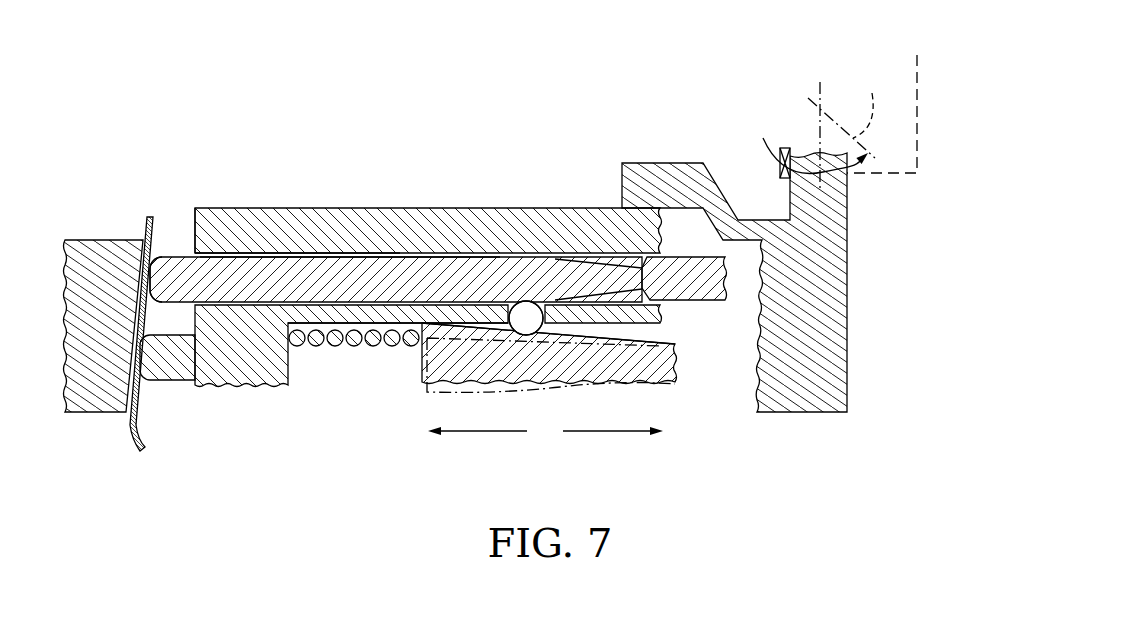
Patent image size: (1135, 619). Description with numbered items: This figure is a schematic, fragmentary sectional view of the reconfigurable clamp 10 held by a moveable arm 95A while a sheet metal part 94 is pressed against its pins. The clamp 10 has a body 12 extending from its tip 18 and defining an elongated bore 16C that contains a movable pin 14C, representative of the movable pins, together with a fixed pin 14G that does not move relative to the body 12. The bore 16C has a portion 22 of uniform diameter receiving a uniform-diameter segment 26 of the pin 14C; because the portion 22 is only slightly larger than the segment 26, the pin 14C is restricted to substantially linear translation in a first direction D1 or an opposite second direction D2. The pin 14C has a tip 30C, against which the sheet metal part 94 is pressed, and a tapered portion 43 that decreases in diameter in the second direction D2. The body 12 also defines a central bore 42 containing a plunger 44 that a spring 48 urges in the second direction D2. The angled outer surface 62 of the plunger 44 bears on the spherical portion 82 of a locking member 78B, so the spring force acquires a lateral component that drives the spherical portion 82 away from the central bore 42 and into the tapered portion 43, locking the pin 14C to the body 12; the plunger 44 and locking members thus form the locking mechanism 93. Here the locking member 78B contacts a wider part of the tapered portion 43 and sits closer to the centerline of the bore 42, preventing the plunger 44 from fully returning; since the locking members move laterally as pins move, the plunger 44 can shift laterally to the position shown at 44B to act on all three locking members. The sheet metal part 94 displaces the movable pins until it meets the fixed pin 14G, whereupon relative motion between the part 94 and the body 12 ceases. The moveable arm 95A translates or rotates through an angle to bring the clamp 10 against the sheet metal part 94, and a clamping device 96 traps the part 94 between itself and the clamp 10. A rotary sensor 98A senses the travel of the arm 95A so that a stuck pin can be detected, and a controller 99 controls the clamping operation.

The reconfigurable clamp 10 is at (160, 127).
The body 12 is at (287, 222).
The tip 18 is at (194, 232).
The bore 16C is at (268, 258).
The portion 22 is at (375, 258).
The segment 26 is at (400, 277).
The tip 30C is at (153, 283).
The tapered portion 43 is at (607, 275).
The pin 14C is at (260, 285).
The central bore 42 is at (300, 327).
The fixed pin 14G is at (167, 380).
The spring 48 is at (297, 340).
The plunger 44 is at (647, 380).
The outer surface 62 is at (480, 330).
The plunger lateral position 44B is at (427, 397).
The locking member 78B is at (510, 311).
The spherical portion 82 is at (526, 318).
The locking mechanism 93 is at (692, 339).
The first direction D1 is at (483, 433).
The second direction D2 is at (605, 433).
The moveable arm 95A is at (803, 402).
The rotary sensor 98A is at (777, 172).
The controller 99 is at (906, 48).
The clamping device 96 is at (83, 413).
The sheet metal part 94 is at (147, 433).